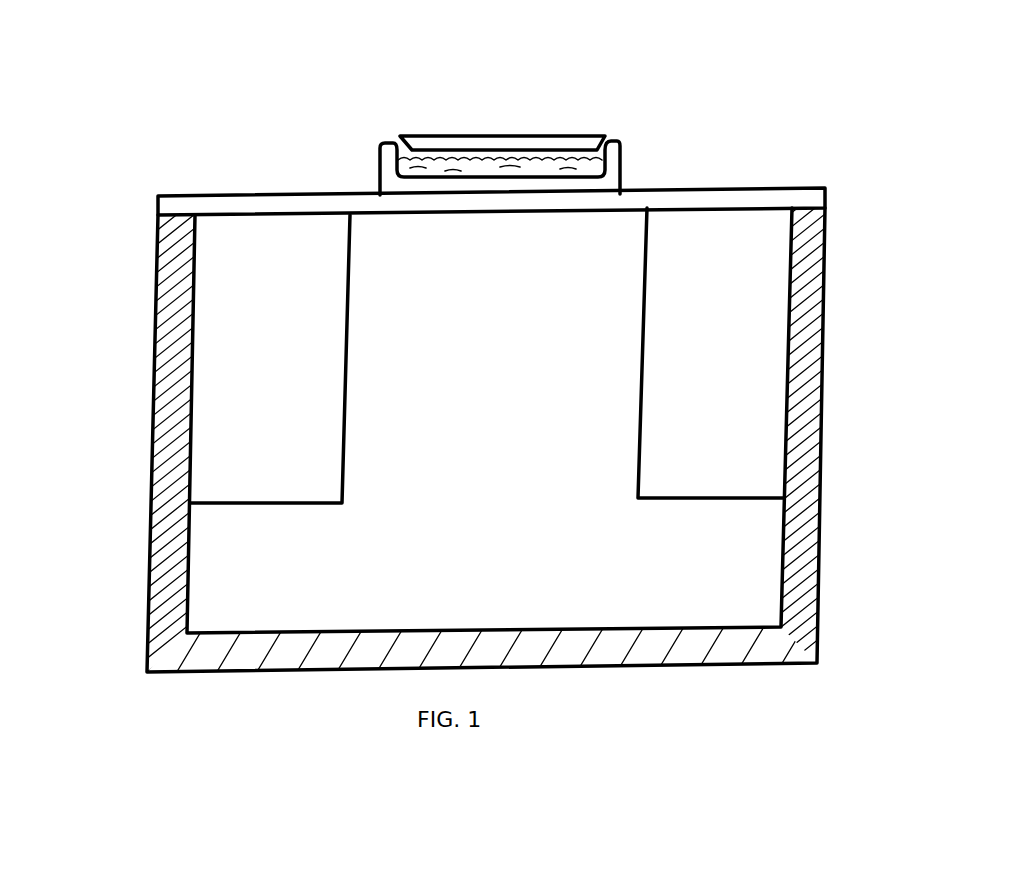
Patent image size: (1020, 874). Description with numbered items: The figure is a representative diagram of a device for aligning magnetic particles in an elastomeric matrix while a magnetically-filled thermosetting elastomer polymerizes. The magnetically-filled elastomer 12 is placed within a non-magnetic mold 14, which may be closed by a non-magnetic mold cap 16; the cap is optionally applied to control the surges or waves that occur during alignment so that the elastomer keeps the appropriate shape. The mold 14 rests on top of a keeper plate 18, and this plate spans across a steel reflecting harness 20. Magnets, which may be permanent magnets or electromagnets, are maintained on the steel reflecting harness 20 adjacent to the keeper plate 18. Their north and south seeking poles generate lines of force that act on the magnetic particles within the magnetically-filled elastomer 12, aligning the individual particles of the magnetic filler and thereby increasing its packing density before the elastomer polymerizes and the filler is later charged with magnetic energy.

The magnetically-filled elastomer 12 is at (600, 168).
The non-magnetic mold 14 is at (381, 143).
The non-magnetic mold cap 16 is at (592, 133).
The keeper plate 18 is at (207, 205).
The steel reflecting harness 20 is at (158, 575).